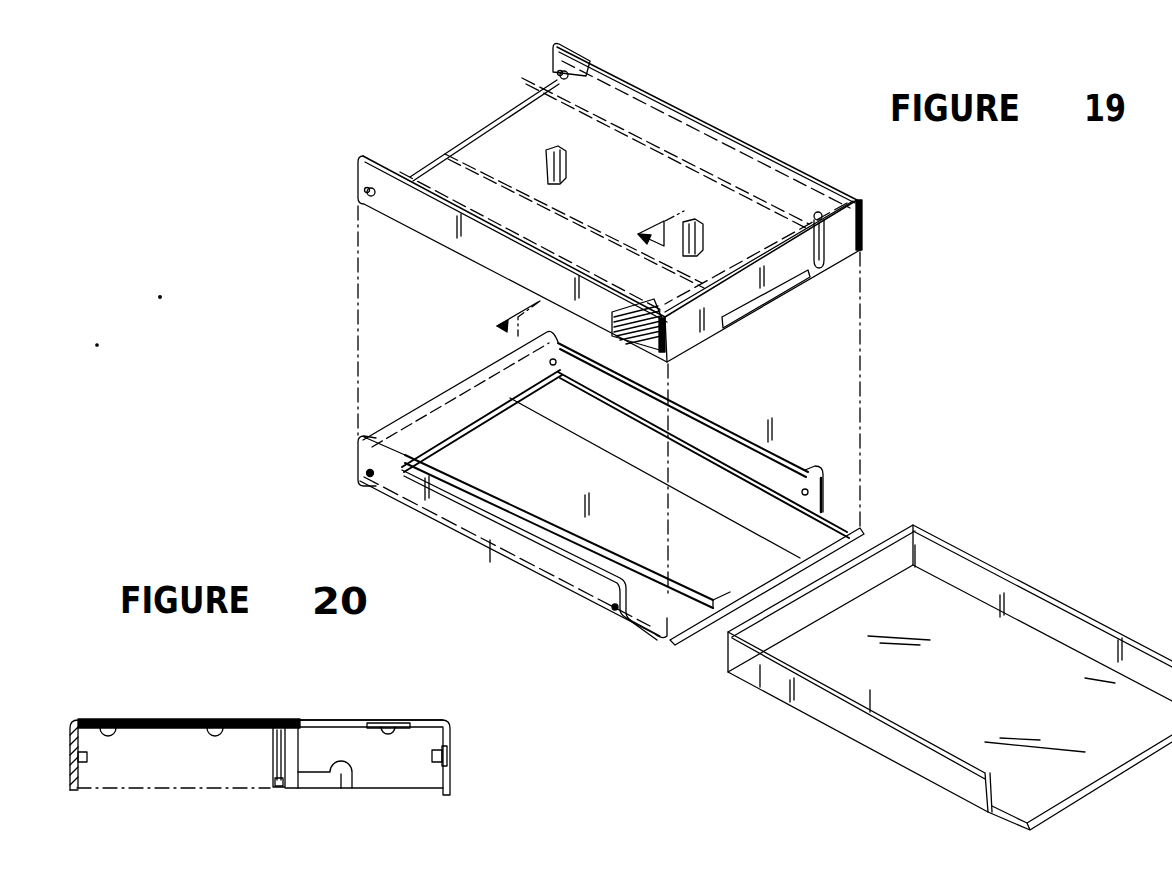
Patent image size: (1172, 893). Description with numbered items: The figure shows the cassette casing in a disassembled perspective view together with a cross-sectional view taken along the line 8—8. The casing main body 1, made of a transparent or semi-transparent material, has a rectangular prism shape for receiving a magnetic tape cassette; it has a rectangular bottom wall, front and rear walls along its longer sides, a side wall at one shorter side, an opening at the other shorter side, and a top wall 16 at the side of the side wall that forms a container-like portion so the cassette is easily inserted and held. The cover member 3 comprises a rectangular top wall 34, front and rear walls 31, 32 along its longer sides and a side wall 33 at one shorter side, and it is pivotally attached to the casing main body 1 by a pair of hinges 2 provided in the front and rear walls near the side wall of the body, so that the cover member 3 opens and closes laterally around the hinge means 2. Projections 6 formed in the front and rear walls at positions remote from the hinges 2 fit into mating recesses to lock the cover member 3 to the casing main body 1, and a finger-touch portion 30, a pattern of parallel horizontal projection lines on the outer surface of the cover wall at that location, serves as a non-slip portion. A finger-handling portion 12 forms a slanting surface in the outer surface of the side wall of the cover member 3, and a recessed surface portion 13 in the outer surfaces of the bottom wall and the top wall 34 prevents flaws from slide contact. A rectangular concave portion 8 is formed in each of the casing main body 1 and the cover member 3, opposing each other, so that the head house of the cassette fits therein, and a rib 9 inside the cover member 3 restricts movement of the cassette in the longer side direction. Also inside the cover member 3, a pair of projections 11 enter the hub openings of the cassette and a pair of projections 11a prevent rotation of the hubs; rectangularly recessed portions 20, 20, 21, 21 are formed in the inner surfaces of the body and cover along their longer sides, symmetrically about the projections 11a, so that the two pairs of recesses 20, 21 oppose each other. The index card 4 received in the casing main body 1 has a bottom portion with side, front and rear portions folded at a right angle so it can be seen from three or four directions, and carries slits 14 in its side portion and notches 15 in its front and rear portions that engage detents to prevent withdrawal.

In FIG. 19, the casing main body 1 is at (640, 641).
In FIG. 19, the hinge means 2 is at (376, 186).
In FIG. 20, the hinge means 2 is at (86, 768).
In FIG. 19, the cover member 3 is at (610, 313).
In FIG. 20, the cover member 3 is at (274, 741).
In FIG. 19, the index card 4 is at (893, 732).
In FIG. 19, the projections 6 is at (612, 609).
In FIG. 19, the rectangular concave portion 8 is at (575, 272).
In FIG. 19, the rib 9 is at (824, 264).
In FIG. 19, the projections 11 is at (484, 536).
In FIG. 20, the projections 11 is at (272, 762).
In FIG. 19, the projections 11a is at (550, 166).
In FIG. 19, the finger-handling portion 12 is at (758, 300).
In FIG. 20, the finger-handling portion 12 is at (346, 776).
In FIG. 19, the recessed surface portion 13 is at (445, 406).
In FIG. 19, the slits 14 is at (831, 487).
In FIG. 19, the notches 15 is at (796, 590).
In FIG. 19, the top wall 16 is at (506, 404).
In FIG. 19, the rectangularly recessed portions 20 is at (432, 160).
In FIG. 20, the rectangularly recessed portions 20 is at (110, 720).
In FIG. 19, the rectangularly recessed portions 21 is at (368, 480).
In FIG. 19, the finger-touch portion 30 is at (636, 336).
In FIG. 19, the front wall 31 is at (512, 259).
In FIG. 20, the front wall 31 is at (74, 790).
In FIG. 19, the rear wall 32 is at (583, 58).
In FIG. 20, the rear wall 32 is at (450, 758).
In FIG. 19, the side wall 33 is at (700, 328).
In FIG. 20, the side wall 33 is at (386, 764).
In FIG. 19, the top wall 34 is at (665, 178).
In FIG. 20, the top wall 34 is at (214, 727).